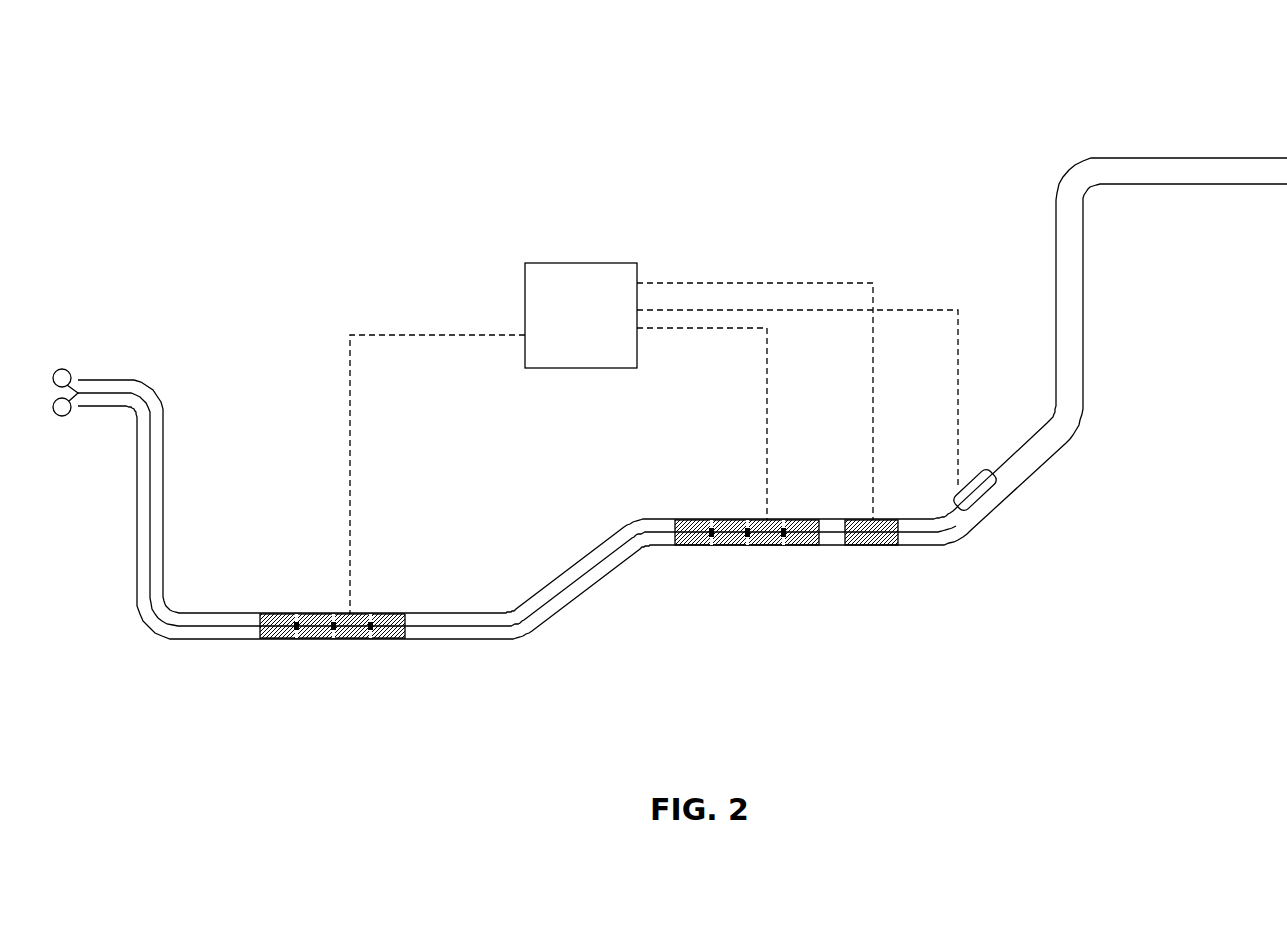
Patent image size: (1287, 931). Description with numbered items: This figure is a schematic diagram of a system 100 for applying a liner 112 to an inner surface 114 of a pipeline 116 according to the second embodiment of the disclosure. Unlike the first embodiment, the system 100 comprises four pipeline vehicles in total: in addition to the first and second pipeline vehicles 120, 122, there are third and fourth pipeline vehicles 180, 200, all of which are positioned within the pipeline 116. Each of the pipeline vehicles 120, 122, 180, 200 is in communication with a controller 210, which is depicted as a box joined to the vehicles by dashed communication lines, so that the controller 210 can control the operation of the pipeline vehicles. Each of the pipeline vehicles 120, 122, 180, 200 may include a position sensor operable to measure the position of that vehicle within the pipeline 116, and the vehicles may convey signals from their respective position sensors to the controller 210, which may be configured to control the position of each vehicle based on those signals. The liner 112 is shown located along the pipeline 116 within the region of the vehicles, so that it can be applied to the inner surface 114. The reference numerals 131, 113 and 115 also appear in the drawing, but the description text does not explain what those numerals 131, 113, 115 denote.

The system 100 is at (767, 103).
The connectors 131 is at (62, 381).
The liner 112 is at (568, 580).
The distal section 113 is at (982, 474).
The inner surface 114 is at (593, 548).
The lumen 115 is at (460, 628).
The pipeline 116 is at (1057, 448).
The first pipeline vehicle 120 is at (972, 497).
The second pipeline vehicle 122 is at (728, 544).
The third pipeline vehicle 180 is at (862, 546).
The fourth pipeline vehicle 200 is at (355, 639).
The controller 210 is at (607, 333).